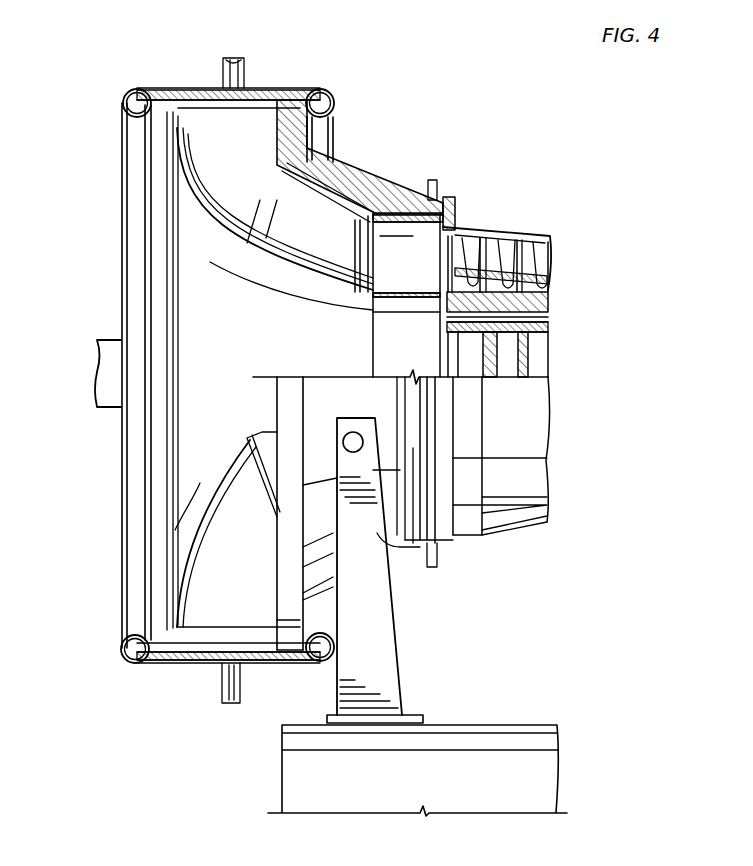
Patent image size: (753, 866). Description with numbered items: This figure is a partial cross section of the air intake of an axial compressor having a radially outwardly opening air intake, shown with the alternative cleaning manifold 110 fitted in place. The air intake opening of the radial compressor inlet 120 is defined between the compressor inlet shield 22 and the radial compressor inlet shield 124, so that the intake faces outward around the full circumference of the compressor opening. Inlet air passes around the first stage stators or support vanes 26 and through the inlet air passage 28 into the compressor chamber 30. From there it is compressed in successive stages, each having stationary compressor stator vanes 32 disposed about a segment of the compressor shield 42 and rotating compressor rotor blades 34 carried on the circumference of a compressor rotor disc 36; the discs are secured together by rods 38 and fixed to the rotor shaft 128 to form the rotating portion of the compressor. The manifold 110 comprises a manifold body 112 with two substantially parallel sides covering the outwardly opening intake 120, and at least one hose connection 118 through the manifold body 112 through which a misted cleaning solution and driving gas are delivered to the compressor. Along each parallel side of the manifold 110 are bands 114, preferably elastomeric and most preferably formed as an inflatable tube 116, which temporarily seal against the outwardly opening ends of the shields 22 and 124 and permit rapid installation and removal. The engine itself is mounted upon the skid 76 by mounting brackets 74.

The compressor inlet shield 22 is at (276, 106).
The support vanes 26 is at (310, 246).
The inlet air passage 28 is at (413, 238).
The compressor chamber 30 is at (480, 242).
The compressor stator vanes 32 is at (530, 231).
The compressor rotor blades 34 is at (528, 272).
The compressor rotor disc 36 is at (530, 357).
The rods 38 is at (520, 316).
The compressor shield 42 is at (495, 533).
The mounting brackets 74 is at (385, 646).
The skid 76 is at (515, 725).
The manifold 110 is at (150, 679).
The manifold body 112 is at (181, 87).
The bands 114 is at (340, 134).
The inflatable tube 116 is at (126, 104).
The hose connection 118 is at (247, 70).
The radial compressor inlet 120 is at (200, 173).
The radial compressor inlet shield 124 is at (200, 440).
The rotor shaft 128 is at (105, 378).